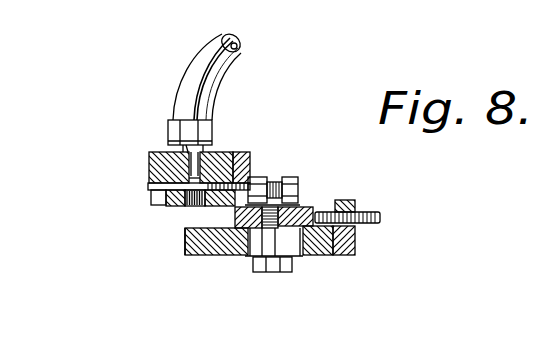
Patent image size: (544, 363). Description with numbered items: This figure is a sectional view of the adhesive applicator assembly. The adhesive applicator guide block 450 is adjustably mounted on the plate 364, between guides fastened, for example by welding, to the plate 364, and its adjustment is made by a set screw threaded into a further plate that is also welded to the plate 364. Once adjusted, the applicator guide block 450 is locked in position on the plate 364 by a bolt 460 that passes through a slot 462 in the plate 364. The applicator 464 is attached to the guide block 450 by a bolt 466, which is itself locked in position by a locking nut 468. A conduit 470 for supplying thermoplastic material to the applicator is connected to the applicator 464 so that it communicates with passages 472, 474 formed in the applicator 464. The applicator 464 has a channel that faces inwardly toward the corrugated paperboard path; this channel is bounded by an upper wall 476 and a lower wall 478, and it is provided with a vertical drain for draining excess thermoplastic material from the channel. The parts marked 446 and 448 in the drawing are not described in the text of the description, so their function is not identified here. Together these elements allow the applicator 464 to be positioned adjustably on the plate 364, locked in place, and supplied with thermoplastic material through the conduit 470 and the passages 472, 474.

The plate 364 is at (185, 243).
The threaded rod 446 is at (378, 212).
The mounting block 448 is at (355, 238).
The adhesive applicator guide block 450 is at (310, 207).
The bolt 460 is at (292, 268).
The slot 462 is at (230, 256).
The applicator 464 is at (170, 120).
The bolt 466 is at (288, 177).
The locking nut 468 is at (262, 177).
The conduit 470 is at (219, 36).
The passage 472 is at (250, 152).
The passage 474 is at (167, 212).
The upper wall 476 is at (148, 183).
The lower wall 478 is at (142, 192).